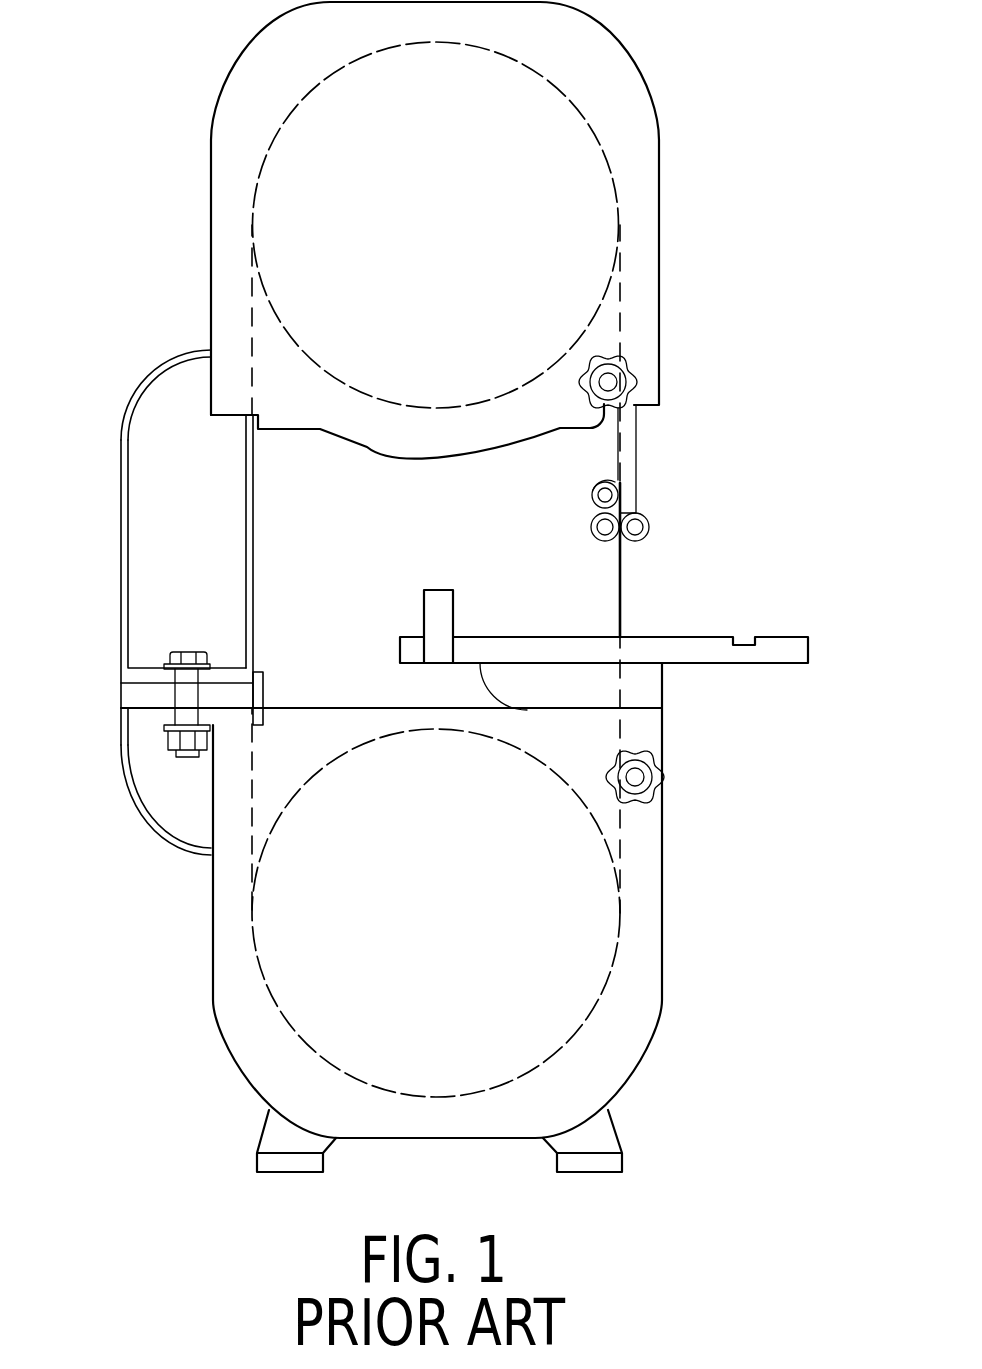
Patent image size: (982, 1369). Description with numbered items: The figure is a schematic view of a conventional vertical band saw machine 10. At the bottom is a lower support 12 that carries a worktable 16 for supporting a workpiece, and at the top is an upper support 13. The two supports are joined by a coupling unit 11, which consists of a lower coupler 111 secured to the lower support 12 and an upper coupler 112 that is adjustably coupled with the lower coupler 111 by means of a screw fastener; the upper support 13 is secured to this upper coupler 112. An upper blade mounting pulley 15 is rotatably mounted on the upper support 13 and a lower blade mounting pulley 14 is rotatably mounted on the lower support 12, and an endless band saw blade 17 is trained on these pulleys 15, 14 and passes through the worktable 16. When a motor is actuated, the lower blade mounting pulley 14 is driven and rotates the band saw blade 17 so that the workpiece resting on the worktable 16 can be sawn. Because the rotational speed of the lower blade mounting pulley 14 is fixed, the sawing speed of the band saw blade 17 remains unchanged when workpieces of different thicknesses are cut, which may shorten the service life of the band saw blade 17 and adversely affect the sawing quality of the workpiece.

The vertical band saw machine 10 is at (662, 155).
The coupling unit 11 is at (121, 572).
The lower coupler 111 is at (155, 797).
The upper coupler 112 is at (122, 420).
The lower support 12 is at (212, 990).
The upper support 13 is at (210, 157).
The lower blade mounting pulley 14 is at (578, 945).
The upper blade mounting pulley 15 is at (275, 215).
The worktable 16 is at (781, 637).
The band saw blade 17 is at (622, 588).